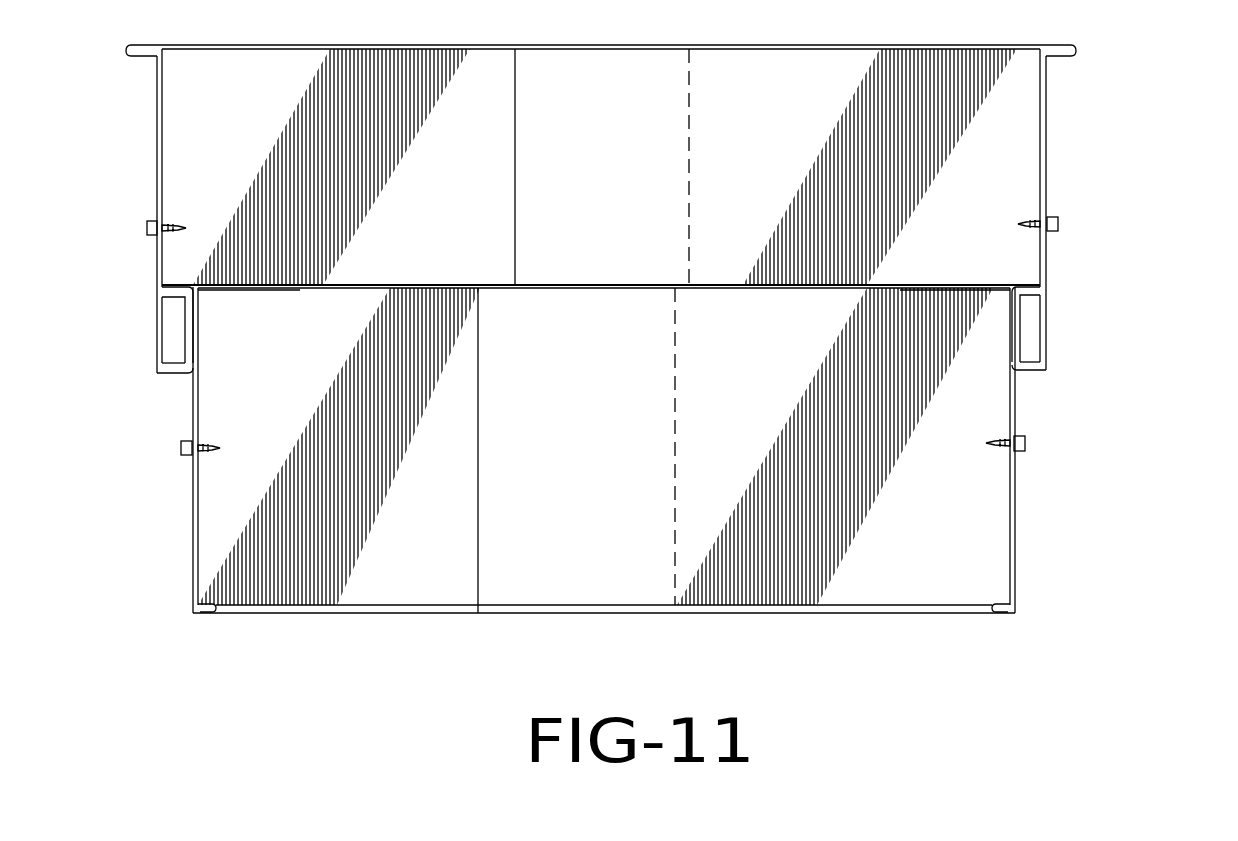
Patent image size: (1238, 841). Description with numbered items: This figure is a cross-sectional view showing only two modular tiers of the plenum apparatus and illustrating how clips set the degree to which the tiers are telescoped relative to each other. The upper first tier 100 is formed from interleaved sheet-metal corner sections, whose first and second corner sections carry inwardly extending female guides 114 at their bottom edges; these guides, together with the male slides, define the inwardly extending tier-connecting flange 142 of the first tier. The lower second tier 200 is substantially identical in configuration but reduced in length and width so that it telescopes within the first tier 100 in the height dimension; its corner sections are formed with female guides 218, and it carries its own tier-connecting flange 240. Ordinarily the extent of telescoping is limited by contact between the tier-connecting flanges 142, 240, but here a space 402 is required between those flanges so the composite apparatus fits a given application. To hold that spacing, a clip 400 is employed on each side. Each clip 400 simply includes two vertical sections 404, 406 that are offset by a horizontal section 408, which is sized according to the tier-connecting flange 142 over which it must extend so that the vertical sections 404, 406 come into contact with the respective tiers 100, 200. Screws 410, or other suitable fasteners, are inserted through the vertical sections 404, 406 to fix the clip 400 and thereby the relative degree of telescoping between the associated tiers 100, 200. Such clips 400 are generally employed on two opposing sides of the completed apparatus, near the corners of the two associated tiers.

The first tier 100 is at (150, 171).
The second tier 200 is at (192, 582).
The tier-connecting flange 240 is at (192, 282).
The female guide 218 is at (1022, 282).
The tier-connecting flange 142 is at (200, 354).
The female guide 114 is at (1048, 350).
The clip 400 is at (631, 331).
The space 402 is at (177, 333).
The vertical section 404 is at (157, 263).
The vertical section 406 is at (191, 417).
The horizontal section 408 is at (175, 376).
The screw 410 is at (147, 224).